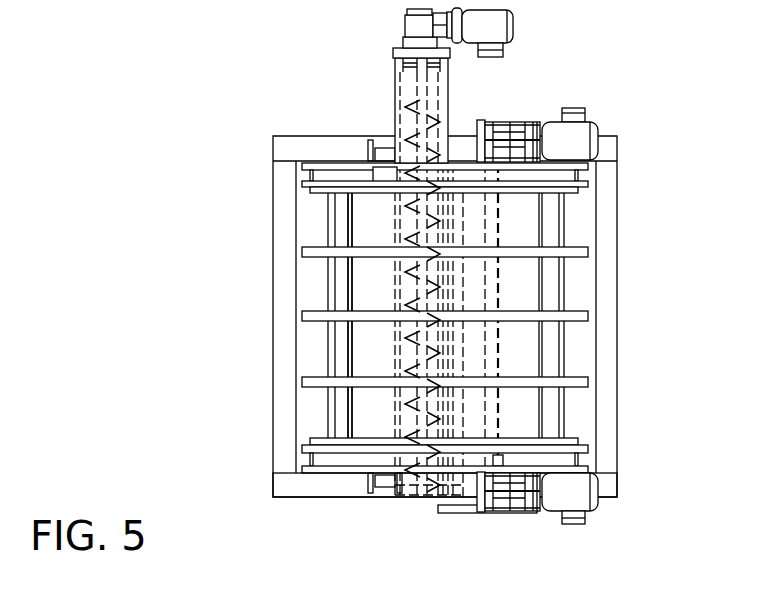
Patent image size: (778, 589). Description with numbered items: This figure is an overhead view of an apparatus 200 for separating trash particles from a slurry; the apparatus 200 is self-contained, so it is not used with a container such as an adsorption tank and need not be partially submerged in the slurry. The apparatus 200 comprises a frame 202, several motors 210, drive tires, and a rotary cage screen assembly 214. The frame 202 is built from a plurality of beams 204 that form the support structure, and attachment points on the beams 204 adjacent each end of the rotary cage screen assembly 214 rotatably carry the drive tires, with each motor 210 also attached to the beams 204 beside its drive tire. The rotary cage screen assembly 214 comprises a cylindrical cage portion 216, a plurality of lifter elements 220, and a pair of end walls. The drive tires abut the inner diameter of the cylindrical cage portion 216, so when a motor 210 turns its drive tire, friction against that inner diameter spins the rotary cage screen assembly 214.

The apparatus 200 is at (150, 118).
The frame 202 is at (272, 448).
The beams 204 is at (313, 491).
The motors 210 is at (598, 124).
The rotary cage screen assembly 214 is at (577, 295).
The cylindrical cage portion 216 is at (502, 413).
The lifter elements 220 is at (540, 283).